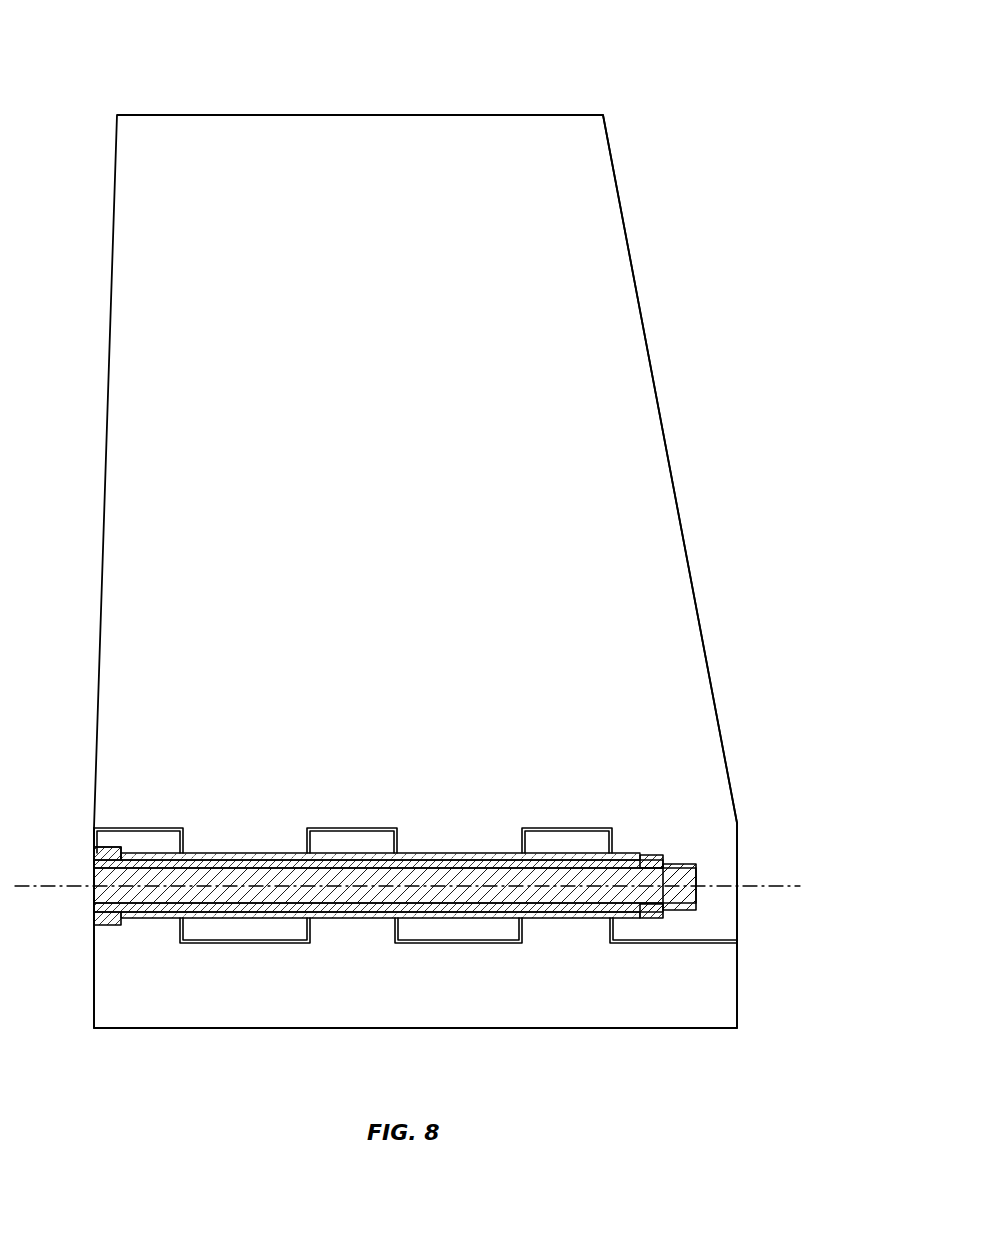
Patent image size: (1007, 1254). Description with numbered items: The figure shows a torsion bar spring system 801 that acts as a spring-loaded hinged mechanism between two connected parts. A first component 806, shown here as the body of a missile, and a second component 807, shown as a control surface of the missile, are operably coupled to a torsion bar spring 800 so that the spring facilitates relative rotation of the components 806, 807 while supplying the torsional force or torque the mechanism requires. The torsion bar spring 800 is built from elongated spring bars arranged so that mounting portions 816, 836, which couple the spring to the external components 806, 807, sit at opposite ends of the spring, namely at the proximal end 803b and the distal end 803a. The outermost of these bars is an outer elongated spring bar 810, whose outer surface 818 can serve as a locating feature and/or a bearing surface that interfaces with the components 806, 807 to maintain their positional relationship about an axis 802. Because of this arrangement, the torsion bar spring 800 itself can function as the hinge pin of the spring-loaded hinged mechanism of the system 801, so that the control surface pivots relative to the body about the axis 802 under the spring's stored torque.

The torsion bar spring system 801 is at (236, 80).
The component 807 is at (690, 568).
The component 806 is at (737, 980).
The axis 802 is at (757, 888).
The torsion bar spring 800 is at (409, 831).
The mounting portion 836 is at (682, 862).
The outer surface 818 is at (248, 853).
The outer elongated spring bar 810 is at (458, 840).
The mounting portion 816 is at (103, 850).
The proximal end 803b is at (112, 818).
The distal end 803a is at (673, 845).